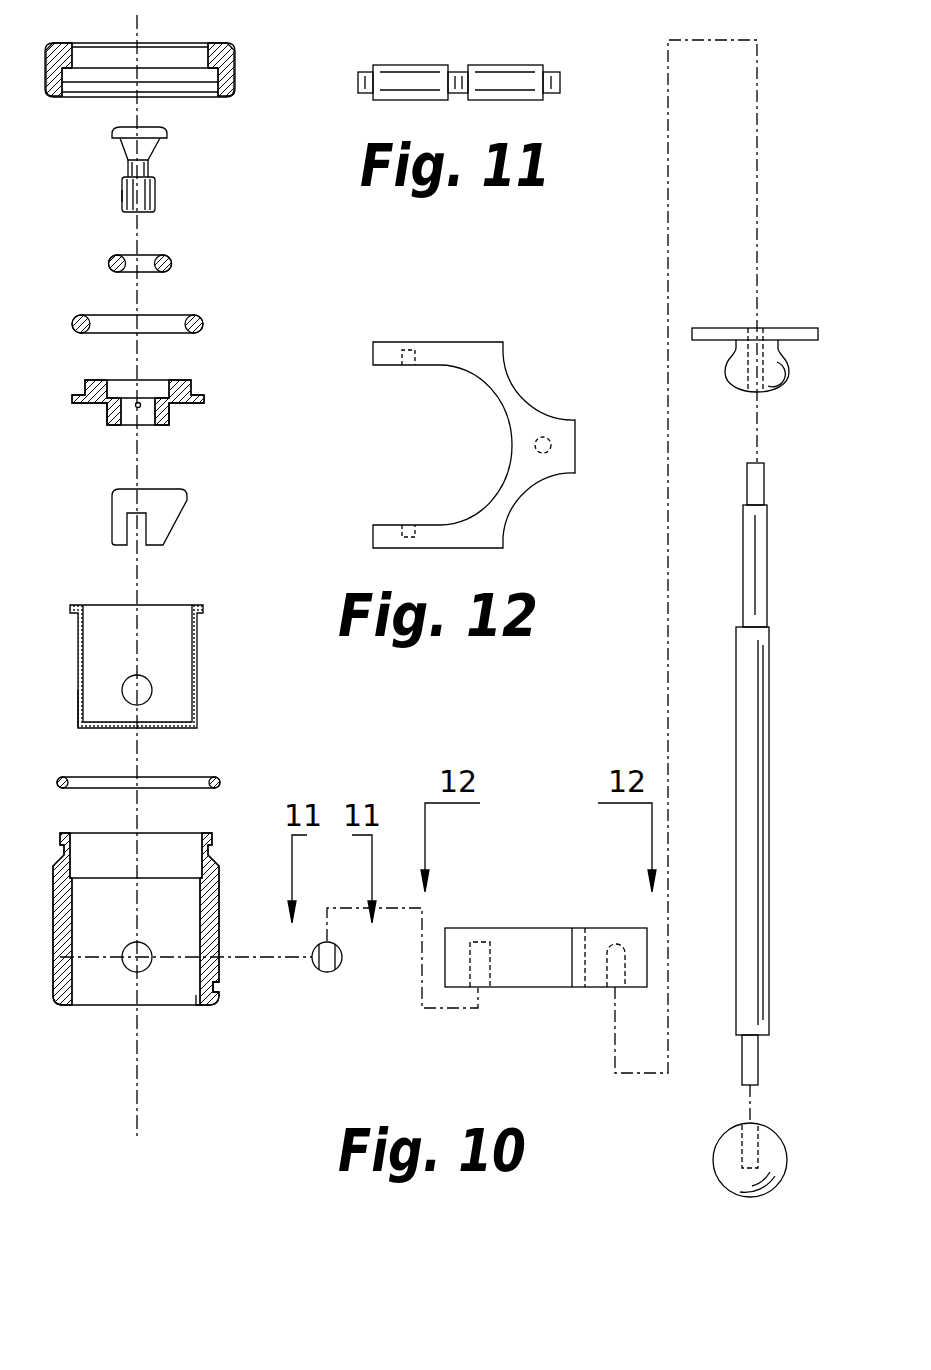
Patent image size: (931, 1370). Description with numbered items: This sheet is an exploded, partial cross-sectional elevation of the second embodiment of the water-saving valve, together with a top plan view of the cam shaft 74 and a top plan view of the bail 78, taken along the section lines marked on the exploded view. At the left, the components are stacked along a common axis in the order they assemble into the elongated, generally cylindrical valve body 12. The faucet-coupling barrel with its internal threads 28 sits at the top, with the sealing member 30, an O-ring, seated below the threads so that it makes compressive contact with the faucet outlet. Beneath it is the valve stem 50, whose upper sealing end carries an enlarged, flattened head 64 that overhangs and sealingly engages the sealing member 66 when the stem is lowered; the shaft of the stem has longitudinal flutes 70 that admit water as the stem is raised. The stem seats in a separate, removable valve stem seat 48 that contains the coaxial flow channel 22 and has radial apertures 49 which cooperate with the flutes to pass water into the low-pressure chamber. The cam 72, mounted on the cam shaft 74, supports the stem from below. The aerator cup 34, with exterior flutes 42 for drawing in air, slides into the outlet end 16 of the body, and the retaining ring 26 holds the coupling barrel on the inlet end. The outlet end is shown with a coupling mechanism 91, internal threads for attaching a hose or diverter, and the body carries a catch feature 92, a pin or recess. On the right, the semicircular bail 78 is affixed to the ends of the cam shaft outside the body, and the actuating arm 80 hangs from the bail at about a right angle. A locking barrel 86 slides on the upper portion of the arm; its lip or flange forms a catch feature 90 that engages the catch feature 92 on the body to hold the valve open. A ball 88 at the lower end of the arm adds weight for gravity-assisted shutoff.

In FIG. 10, the valve body 12 is at (219, 897).
In FIG. 10, the outlet end 16 is at (62, 1008).
In FIG. 10, the coaxial flow channel 22 is at (118, 427).
In FIG. 10, the retaining ring 26 is at (205, 778).
In FIG. 10, the internal threads 28 is at (207, 56).
In FIG. 10, the sealing member 30 is at (204, 319).
In FIG. 10, the aerator cup 34 is at (200, 648).
In FIG. 10, the flutes 42 is at (74, 703).
In FIG. 10, the valve stem seat 48 is at (185, 392).
In FIG. 10, the radial apertures 49 is at (172, 402).
In FIG. 10, the valve stem 50 is at (156, 187).
In FIG. 10, the enlarged flattened head 64 is at (169, 132).
In FIG. 10, the sealing member 66 is at (171, 258).
In FIG. 10, the longitudinal flutes 70 is at (123, 198).
In FIG. 10, the cam 72 is at (184, 492).
In FIG. 10, the cam shaft 74 is at (330, 944).
In FIG. 11, the cam shaft 74 is at (522, 65).
In FIG. 10, the bail 78 is at (523, 988).
In FIG. 12, the bail 78 is at (483, 342).
In FIG. 10, the actuating arm 80 is at (748, 815).
In FIG. 10, the locking barrel 86 is at (768, 391).
In FIG. 10, the ball 88 is at (720, 1186).
In FIG. 10, the catch feature 90 is at (693, 328).
In FIG. 10, the coupling mechanism 91 is at (194, 1005).
In FIG. 10, the catch feature 92 is at (220, 988).